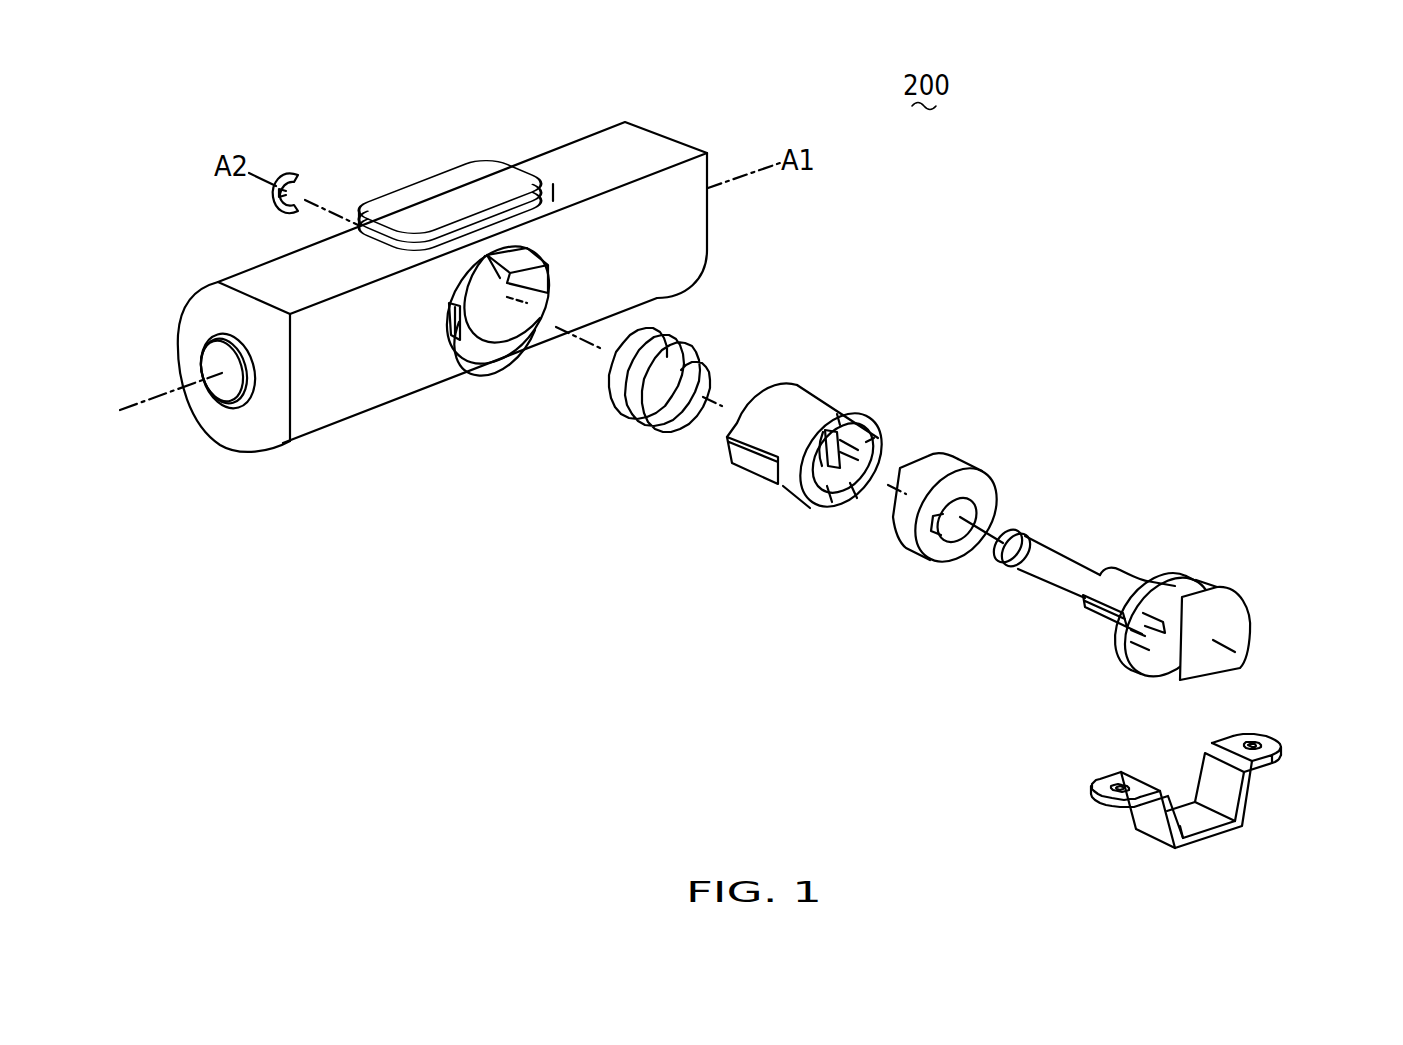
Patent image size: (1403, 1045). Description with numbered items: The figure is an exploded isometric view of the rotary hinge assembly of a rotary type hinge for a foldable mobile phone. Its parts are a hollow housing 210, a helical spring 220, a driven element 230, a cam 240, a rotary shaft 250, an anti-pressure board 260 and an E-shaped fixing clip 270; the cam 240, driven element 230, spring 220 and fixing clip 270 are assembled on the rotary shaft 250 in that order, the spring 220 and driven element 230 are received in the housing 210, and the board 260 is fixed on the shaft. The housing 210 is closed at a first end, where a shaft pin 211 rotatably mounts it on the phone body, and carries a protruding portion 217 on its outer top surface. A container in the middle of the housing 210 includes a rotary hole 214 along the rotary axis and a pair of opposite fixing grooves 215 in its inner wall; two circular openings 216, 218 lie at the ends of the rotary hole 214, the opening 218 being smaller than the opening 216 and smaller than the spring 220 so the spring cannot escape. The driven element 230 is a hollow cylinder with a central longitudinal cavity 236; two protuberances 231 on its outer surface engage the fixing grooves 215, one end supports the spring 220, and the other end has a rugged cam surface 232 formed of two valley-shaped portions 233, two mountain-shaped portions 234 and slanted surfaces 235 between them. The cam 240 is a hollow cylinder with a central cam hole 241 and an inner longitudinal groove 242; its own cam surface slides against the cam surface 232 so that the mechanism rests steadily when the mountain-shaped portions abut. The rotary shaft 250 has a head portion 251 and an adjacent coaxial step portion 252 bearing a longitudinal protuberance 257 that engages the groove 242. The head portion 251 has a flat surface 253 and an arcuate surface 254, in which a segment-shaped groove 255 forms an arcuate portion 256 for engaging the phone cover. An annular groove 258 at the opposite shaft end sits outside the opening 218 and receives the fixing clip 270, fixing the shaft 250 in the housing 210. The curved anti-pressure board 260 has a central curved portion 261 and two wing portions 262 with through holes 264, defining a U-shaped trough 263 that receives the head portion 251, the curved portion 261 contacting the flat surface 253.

The hollow housing 210 is at (678, 125).
The shaft pin 211 is at (232, 382).
The rotary hole 214 is at (540, 330).
The fixing grooves 215 is at (555, 275).
The circular opening 216 is at (497, 330).
The protruding portion 217 is at (452, 192).
The circular opening 218 is at (452, 304).
The helical spring 220 is at (648, 410).
The driven element 230 is at (812, 375).
The protuberances 231 is at (742, 452).
The cam surface 232 is at (978, 364).
The valley-shaped portions 233 is at (842, 402).
The mountain-shaped portions 234 is at (838, 468).
The slanted surfaces 235 is at (835, 432).
The central longitudinal cavity 236 is at (830, 467).
The cam 240 is at (978, 462).
The cam hole 241 is at (957, 538).
The groove 242 is at (935, 527).
The rotary shaft 250 is at (1200, 568).
The head portion 251 is at (1237, 617).
The step portion 252 is at (1117, 578).
The flat surface 253 is at (1238, 655).
The arcuate surface 254 is at (1133, 642).
The segment-shaped groove 255 is at (1136, 645).
The arcuate portion 256 is at (1198, 592).
The protuberance 257 is at (1107, 617).
The annular groove 258 is at (1022, 538).
The anti-pressure board 260 is at (1272, 785).
The central curved portion 261 is at (1200, 838).
The wing portions 262 is at (1097, 782).
The U-shaped trough 263 is at (1215, 815).
The through holes 264 is at (1118, 790).
The E-shaped fixing clip 270 is at (296, 172).